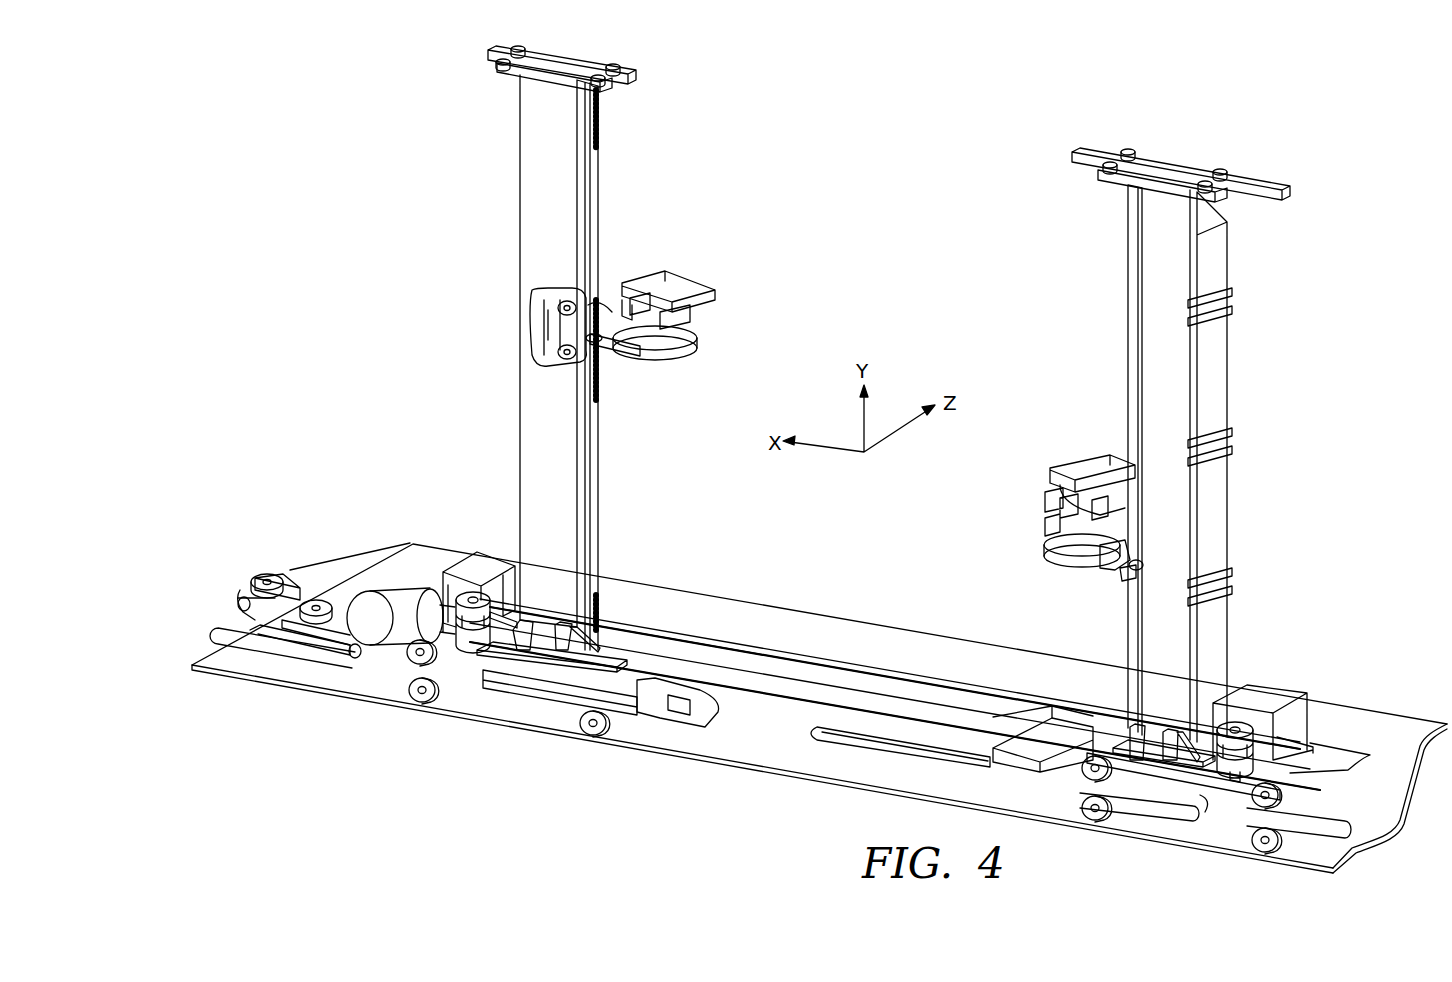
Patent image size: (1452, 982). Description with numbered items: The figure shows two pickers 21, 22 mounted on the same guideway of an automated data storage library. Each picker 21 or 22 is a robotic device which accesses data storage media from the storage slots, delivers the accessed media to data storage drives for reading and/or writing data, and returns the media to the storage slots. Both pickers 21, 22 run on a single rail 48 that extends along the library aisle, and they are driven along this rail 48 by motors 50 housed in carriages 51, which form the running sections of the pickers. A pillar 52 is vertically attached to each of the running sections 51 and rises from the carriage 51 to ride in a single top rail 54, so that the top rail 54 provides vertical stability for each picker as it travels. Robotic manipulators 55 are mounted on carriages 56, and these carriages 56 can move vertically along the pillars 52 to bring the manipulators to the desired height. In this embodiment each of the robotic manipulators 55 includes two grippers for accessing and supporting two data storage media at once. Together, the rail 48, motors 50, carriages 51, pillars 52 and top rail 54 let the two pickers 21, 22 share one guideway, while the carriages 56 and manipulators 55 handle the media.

The picker 21 is at (478, 242).
The picker 22 is at (1268, 340).
The rail 48 is at (800, 708).
The motor 50 is at (470, 633).
The carriage 51 is at (491, 550).
The pillar 52 is at (522, 428).
The top rail 54 is at (560, 58).
The robotic manipulator 55 is at (668, 270).
The carriage 56 is at (616, 352).